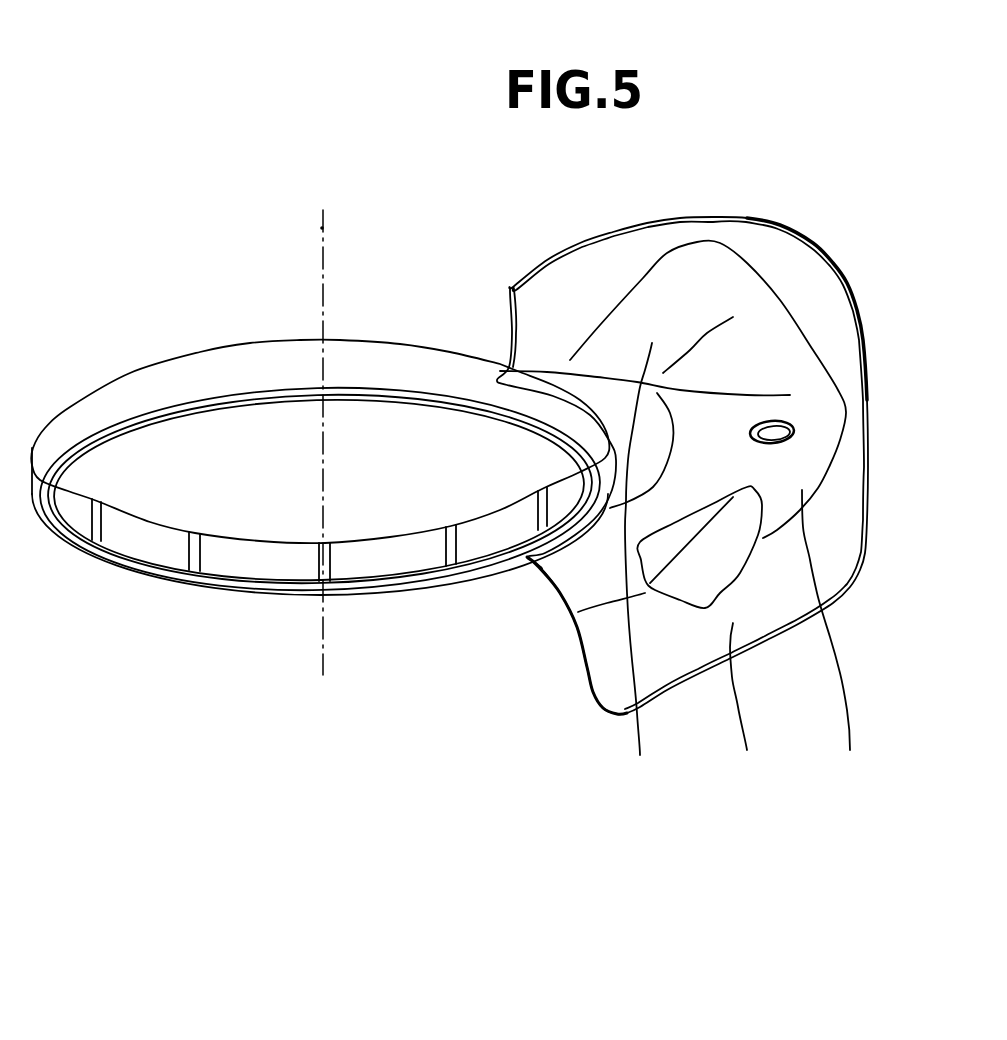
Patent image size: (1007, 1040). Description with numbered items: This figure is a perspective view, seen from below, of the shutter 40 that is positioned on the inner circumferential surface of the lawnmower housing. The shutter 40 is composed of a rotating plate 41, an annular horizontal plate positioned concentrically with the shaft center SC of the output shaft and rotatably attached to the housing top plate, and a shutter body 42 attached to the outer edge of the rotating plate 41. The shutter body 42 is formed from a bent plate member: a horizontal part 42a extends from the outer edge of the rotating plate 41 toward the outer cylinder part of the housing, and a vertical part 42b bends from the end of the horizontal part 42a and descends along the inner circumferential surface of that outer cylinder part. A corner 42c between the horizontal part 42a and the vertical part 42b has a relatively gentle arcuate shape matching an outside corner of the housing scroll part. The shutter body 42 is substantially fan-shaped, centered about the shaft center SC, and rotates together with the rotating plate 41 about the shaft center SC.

The shutter 40 is at (185, 168).
The rotating plate 41 is at (245, 560).
The shutter body 42 is at (890, 807).
The horizontal part 42a is at (640, 755).
The vertical part 42b is at (747, 750).
The corner 42c is at (850, 750).
The shaft center SC is at (322, 228).